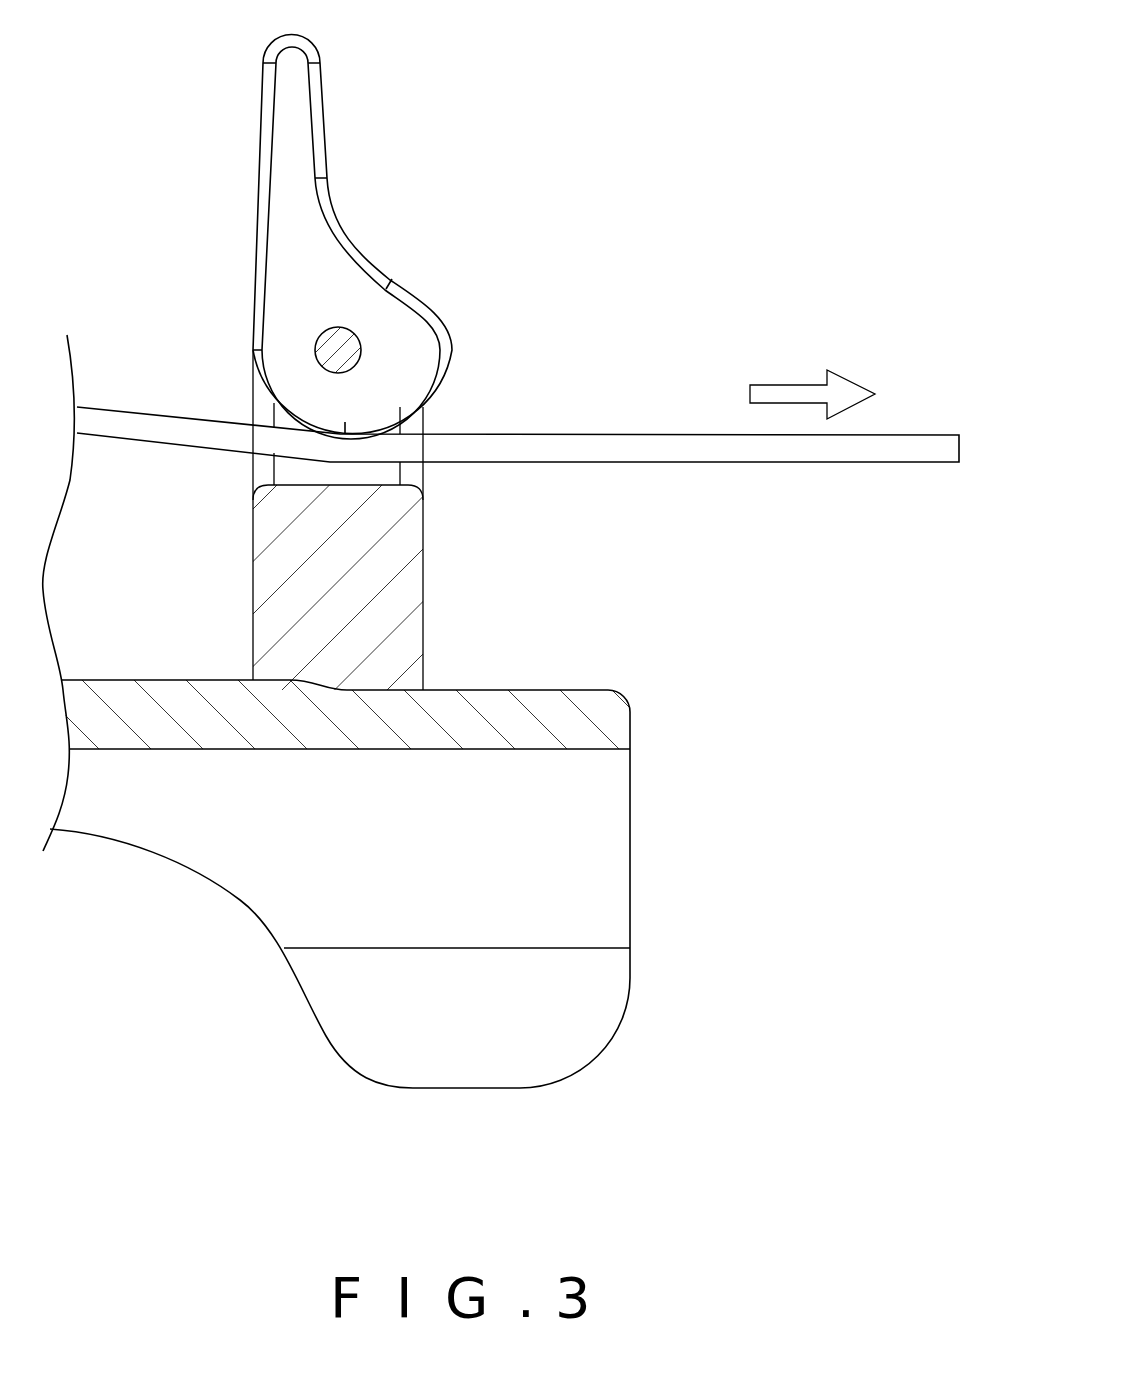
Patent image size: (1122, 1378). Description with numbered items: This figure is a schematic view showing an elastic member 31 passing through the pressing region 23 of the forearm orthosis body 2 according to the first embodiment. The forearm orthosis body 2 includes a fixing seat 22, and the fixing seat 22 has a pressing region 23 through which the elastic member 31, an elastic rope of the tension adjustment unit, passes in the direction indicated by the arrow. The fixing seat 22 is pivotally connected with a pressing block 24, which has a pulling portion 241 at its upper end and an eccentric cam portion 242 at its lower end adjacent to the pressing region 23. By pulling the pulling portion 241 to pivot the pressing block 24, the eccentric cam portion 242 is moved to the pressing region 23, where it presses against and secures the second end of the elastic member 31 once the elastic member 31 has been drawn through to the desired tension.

The forearm orthosis body 2 is at (518, 727).
The fixing seat 22 is at (402, 587).
The pressing region 23 is at (348, 470).
The pressing block 24 is at (348, 236).
The pulling portion 241 is at (292, 83).
The eccentric cam portion 242 is at (408, 346).
The elastic member 31 is at (606, 445).